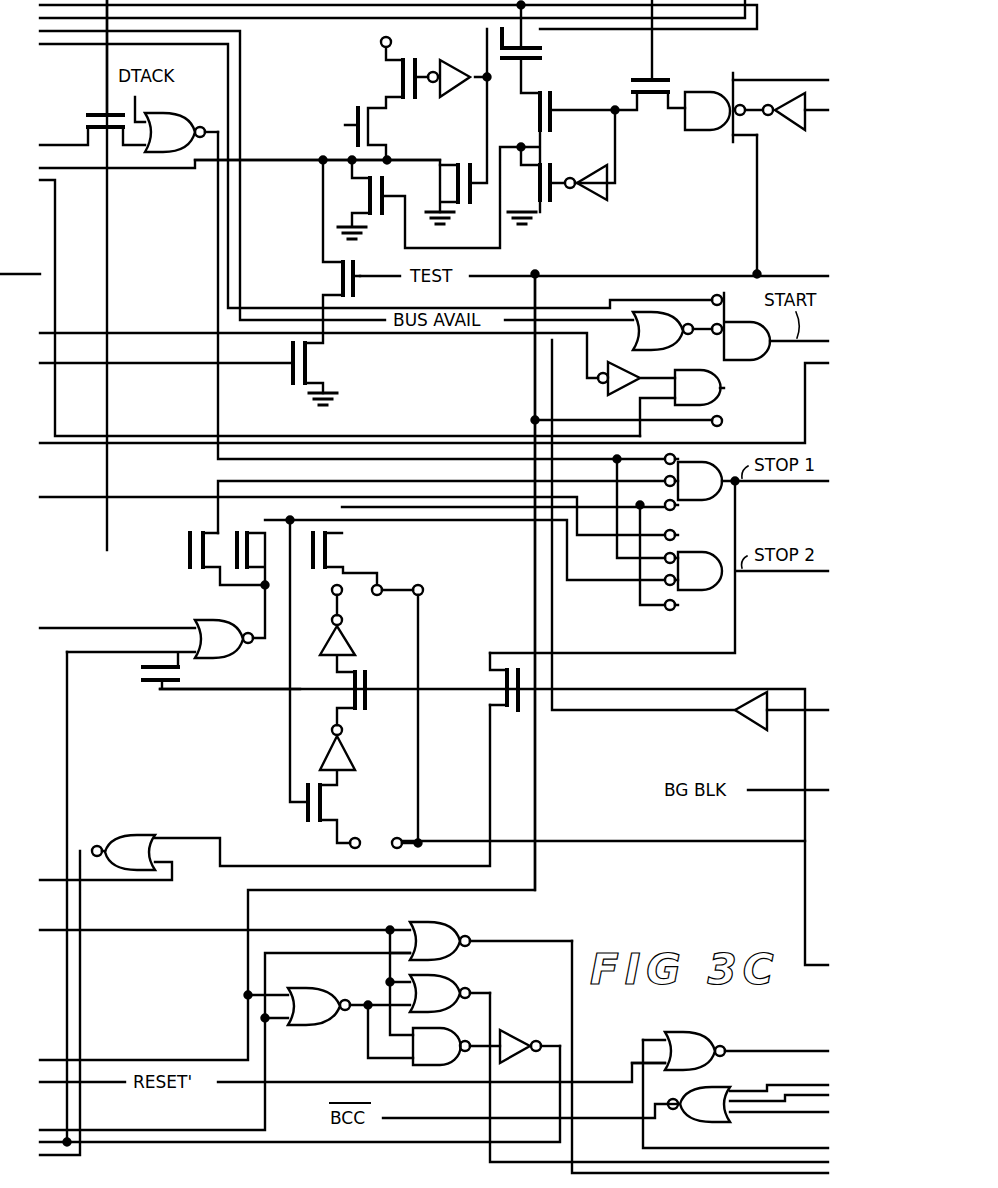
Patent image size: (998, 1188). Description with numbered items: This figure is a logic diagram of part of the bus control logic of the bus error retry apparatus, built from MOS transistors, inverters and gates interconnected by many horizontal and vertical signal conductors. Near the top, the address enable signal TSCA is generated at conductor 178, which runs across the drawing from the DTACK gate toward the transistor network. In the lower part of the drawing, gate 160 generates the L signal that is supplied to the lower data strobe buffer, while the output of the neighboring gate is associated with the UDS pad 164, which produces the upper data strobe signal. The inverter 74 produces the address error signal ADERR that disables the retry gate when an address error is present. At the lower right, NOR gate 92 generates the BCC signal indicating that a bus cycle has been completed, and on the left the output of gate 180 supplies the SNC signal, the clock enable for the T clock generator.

The conductor 178 is at (295, 143).
The gate 180 is at (128, 836).
The UDS pad 164 is at (452, 930).
The gate 160 is at (452, 978).
The inverter 74 is at (506, 1032).
The NOR gate 92 is at (722, 1122).